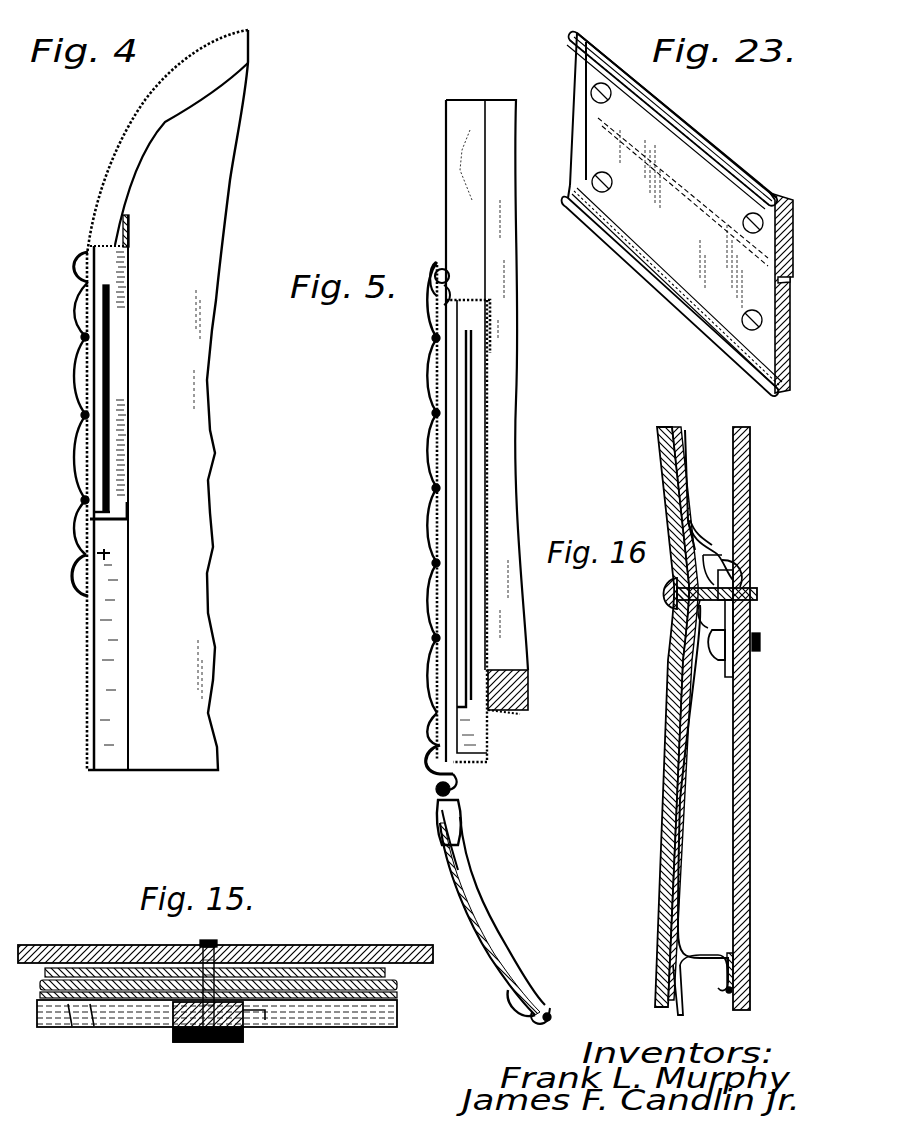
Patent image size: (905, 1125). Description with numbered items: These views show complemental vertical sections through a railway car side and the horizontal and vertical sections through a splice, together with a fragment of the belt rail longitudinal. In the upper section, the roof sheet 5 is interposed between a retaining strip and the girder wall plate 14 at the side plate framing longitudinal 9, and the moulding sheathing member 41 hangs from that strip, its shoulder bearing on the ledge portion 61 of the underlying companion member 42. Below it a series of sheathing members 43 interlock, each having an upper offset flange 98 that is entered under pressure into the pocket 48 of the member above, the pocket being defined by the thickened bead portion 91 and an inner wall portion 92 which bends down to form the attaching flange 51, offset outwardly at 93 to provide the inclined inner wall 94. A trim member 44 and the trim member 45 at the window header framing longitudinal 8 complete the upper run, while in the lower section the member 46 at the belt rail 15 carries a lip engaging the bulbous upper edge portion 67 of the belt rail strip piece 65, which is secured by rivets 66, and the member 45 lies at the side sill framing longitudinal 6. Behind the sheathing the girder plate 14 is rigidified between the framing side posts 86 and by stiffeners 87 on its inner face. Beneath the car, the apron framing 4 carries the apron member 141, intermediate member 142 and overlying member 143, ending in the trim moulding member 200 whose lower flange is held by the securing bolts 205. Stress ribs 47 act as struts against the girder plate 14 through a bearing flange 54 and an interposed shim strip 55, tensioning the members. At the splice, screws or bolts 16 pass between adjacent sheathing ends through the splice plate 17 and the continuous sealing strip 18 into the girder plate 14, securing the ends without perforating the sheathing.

In FIG. 5, the apron framing 4 is at (470, 886).
In FIG. 4, the roof sheet 5 is at (108, 152).
In FIG. 5, the side sill framing longitudinal 6 is at (490, 746).
In FIG. 4, the window header framing longitudinal 8 is at (129, 514).
In FIG. 4, the side plate framing longitudinal 9 is at (129, 230).
In FIG. 16, the girder wall plate 14 is at (748, 754).
In FIG. 15, the girder wall plate 14 is at (360, 955).
In FIG. 5, the belt rail 15 is at (476, 300).
In FIG. 16, the belt rail 15 is at (629, 602).
In FIG. 16, the screws or bolts 16 is at (667, 598).
In FIG. 15, the screws or bolts 16 is at (208, 936).
In FIG. 16, the splice plate 17 is at (663, 759).
In FIG. 15, the splice plate 17 is at (173, 1032).
In FIG. 16, the sealing strip 18 is at (668, 797).
In FIG. 15, the sealing strip 18 is at (258, 1020).
In FIG. 4, the sheathing member 41 is at (76, 267).
In FIG. 4, the companion member 42 is at (76, 333).
In FIG. 4, the sheathing members 43 is at (76, 422).
In FIG. 5, the sheathing members 43 is at (430, 450).
In FIG. 16, the sheathing members 43 is at (678, 854).
In FIG. 15, the sheathing members 43 is at (400, 1017).
In FIG. 4, the latch 44 is at (78, 506).
In FIG. 5, the latch 44 is at (436, 703).
In FIG. 4, the sheathing member 45 is at (72, 573).
In FIG. 5, the sheathing member 45 is at (430, 762).
In FIG. 5, the sheathing member 46 is at (430, 352).
In FIG. 16, the stress ribs 47 is at (696, 955).
In FIG. 16, the pocket 48 is at (703, 562).
In FIG. 16, the attaching flange 51 is at (740, 676).
In FIG. 16, the bearing flange 54 is at (727, 988).
In FIG. 16, the shim strip 55 is at (730, 996).
In FIG. 15, the ledge portion 61 is at (398, 999).
In FIG. 5, the belt rail strip piece 65 is at (450, 288).
In FIG. 23, the belt rail strip piece 65 is at (578, 80).
In FIG. 5, the rivets 66 is at (436, 297).
In FIG. 5, the bulbous upper edge portion 67 is at (446, 272).
In FIG. 23, the bulbous upper edge portion 67 is at (575, 36).
In FIG. 4, the framing side posts 86 is at (118, 364).
In FIG. 5, the framing side posts 86 is at (482, 405).
In FIG. 4, the stiffeners 87 is at (106, 398).
In FIG. 5, the stiffeners 87 is at (466, 472).
In FIG. 5, the bead portion 91 is at (450, 790).
In FIG. 16, the bead portion 91 is at (672, 608).
In FIG. 15, the bead portion 91 is at (92, 1006).
In FIG. 16, the inner wall portion 92 is at (705, 546).
In FIG. 16, the offset 93 is at (734, 612).
In FIG. 15, the offset 93 is at (330, 962).
In FIG. 16, the inner wall 94 is at (740, 578).
In FIG. 15, the inner wall 94 is at (276, 978).
In FIG. 16, the offset flange 98 is at (742, 558).
In FIG. 15, the offset flange 98 is at (70, 1006).
In FIG. 5, the apron sheathing member 141 is at (437, 818).
In FIG. 5, the arm 142 is at (450, 884).
In FIG. 5, the overlying member 143 is at (472, 928).
In FIG. 5, the trim moulding member 200 is at (520, 1003).
In FIG. 5, the securing bolts 205 is at (552, 1017).